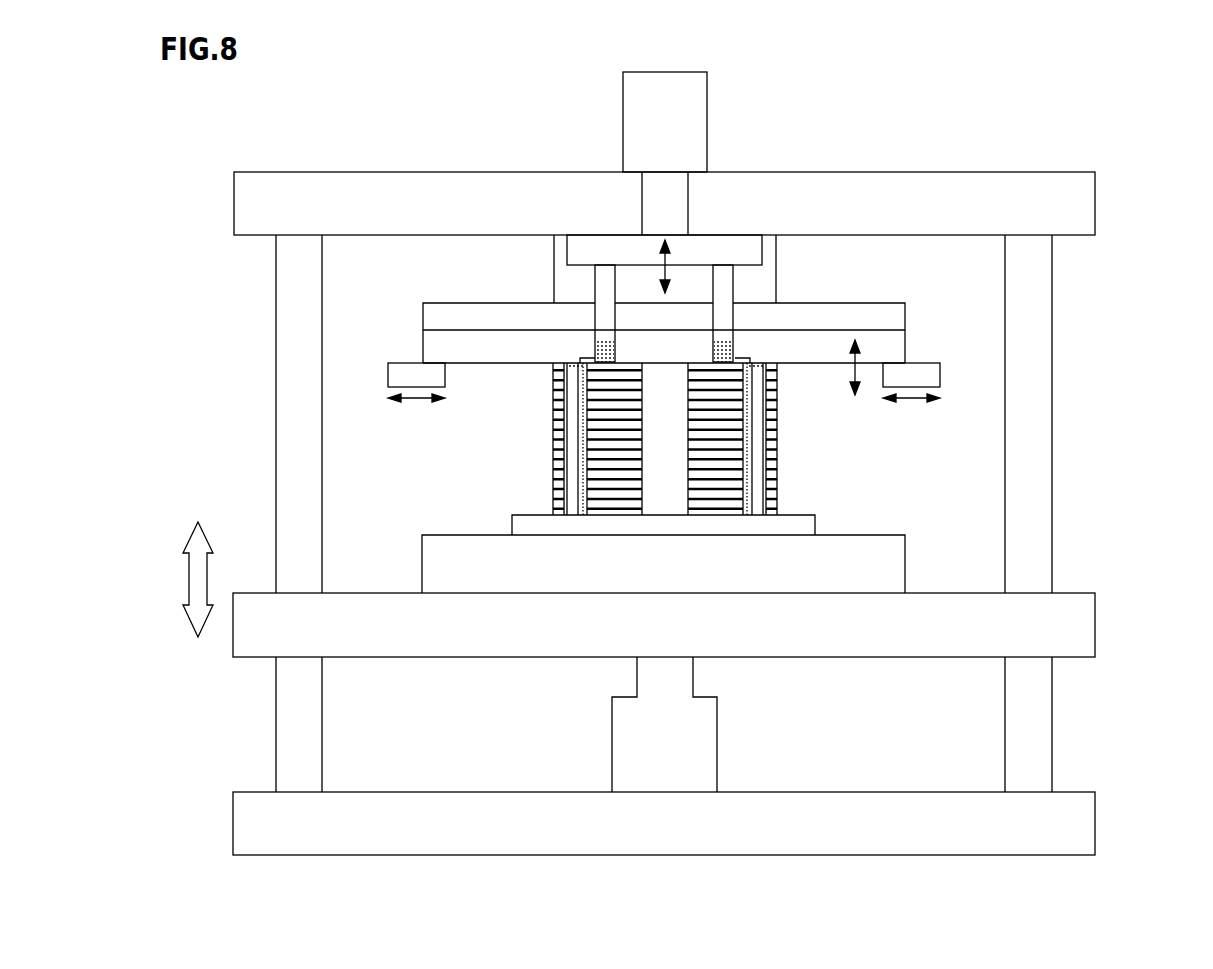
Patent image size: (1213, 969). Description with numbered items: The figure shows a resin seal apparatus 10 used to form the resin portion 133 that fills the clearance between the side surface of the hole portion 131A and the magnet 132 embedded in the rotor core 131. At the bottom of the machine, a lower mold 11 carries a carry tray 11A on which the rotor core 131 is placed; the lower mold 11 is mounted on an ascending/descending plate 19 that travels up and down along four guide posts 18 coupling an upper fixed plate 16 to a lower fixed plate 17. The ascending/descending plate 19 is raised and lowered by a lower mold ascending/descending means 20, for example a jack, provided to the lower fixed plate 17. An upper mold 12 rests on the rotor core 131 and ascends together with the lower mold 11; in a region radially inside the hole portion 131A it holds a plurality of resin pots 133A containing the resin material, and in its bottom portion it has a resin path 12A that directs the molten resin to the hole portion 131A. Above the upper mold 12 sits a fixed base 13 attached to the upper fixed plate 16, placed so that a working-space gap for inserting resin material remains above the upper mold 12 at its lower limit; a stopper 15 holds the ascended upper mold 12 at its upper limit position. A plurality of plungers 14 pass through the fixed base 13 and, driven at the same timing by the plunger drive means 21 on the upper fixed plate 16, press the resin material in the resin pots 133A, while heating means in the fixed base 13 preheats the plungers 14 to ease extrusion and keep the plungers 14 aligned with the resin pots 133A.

The resin seal apparatus 10 is at (1078, 122).
The lower mold 11 is at (909, 562).
The carry tray 11A is at (797, 524).
The upper mold 12 is at (908, 349).
The resin path 12A is at (605, 312).
The fixed base 13 is at (421, 322).
The plunger 14 is at (580, 303).
The stopper 15 is at (415, 372).
The upper fixed plate 16 is at (1097, 205).
The lower fixed plate 17 is at (1097, 823).
The guide post 18 is at (305, 439).
The ascending/descending plate 19 is at (1097, 620).
The lower mold ascending/descending means 20 is at (720, 740).
The plunger drive means 21 is at (678, 123).
The rotor core 131 is at (553, 476).
The hole portion 131A is at (565, 361).
The magnet 132 is at (575, 502).
The resin portion 133 is at (617, 349).
The resin pot 133A is at (587, 347).